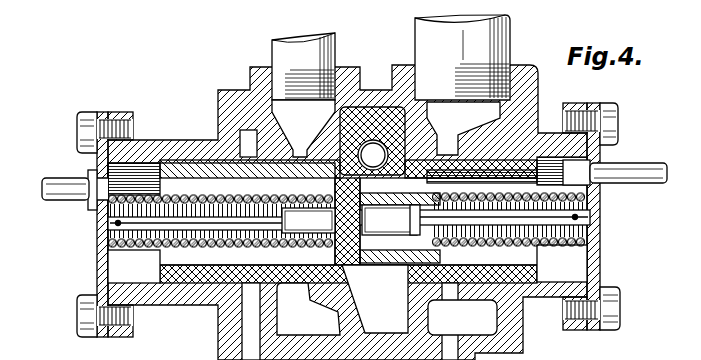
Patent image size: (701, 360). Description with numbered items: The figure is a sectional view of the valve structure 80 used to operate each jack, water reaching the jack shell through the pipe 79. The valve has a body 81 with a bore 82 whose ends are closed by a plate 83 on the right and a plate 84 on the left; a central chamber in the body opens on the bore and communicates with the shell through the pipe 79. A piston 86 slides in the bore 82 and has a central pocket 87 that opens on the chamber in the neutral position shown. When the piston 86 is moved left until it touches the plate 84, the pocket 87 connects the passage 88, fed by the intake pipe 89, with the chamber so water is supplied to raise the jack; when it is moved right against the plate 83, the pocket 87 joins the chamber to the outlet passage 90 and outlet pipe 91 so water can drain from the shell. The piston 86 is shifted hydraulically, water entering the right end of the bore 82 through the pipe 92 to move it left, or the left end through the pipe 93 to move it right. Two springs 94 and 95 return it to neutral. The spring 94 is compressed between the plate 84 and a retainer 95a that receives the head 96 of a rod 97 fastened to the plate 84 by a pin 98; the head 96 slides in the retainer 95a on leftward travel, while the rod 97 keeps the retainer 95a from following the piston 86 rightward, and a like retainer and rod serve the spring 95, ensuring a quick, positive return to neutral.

The pipe 79 is at (373, 152).
The valve structure 80 is at (183, 126).
The body 81 is at (510, 313).
The bore 82 is at (580, 277).
The plate 83 is at (603, 248).
The plate 84 is at (105, 258).
The piston 86 is at (538, 265).
The central pocket 87 is at (387, 359).
The passage 88 is at (298, 150).
The intake pipe 89 is at (330, 48).
The outlet passage 90 is at (448, 150).
The outlet pipe 91 is at (497, 42).
The pipe 92 is at (627, 163).
The pipe 93 is at (78, 192).
The spring 94 is at (240, 241).
The spring 95 is at (480, 243).
The retainer 95a is at (296, 211).
The head 96 is at (279, 241).
The rod 97 is at (123, 246).
The pin 98 is at (100, 230).